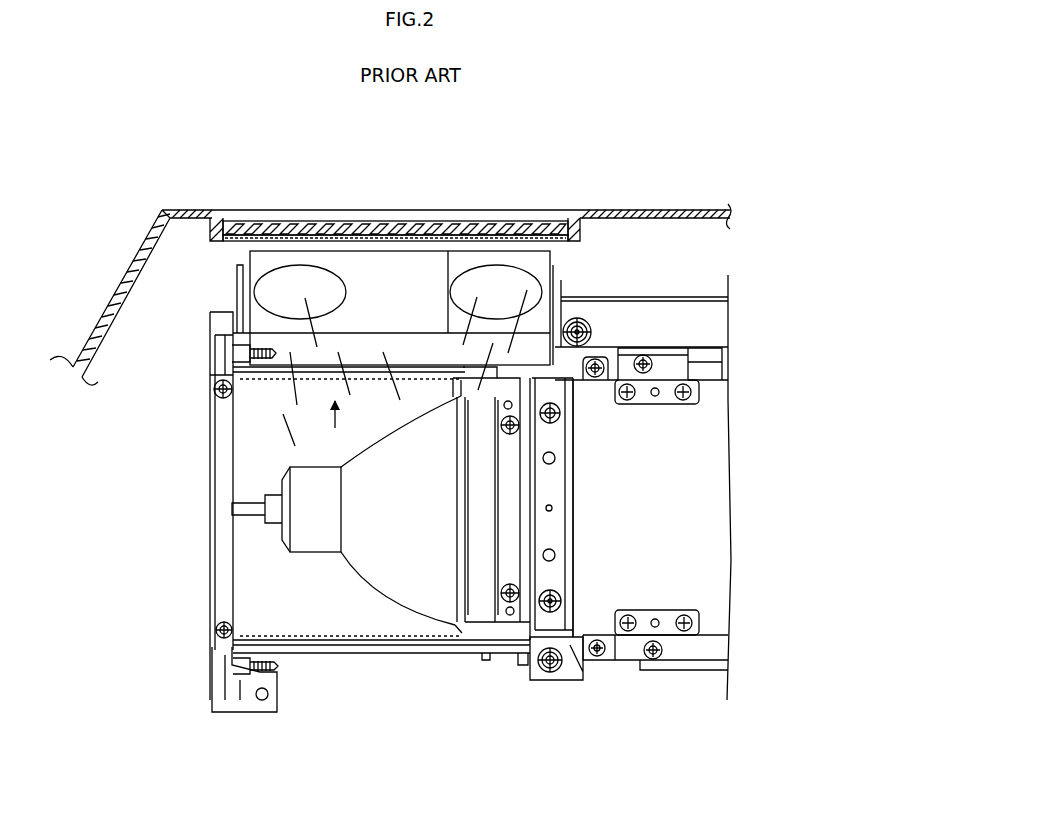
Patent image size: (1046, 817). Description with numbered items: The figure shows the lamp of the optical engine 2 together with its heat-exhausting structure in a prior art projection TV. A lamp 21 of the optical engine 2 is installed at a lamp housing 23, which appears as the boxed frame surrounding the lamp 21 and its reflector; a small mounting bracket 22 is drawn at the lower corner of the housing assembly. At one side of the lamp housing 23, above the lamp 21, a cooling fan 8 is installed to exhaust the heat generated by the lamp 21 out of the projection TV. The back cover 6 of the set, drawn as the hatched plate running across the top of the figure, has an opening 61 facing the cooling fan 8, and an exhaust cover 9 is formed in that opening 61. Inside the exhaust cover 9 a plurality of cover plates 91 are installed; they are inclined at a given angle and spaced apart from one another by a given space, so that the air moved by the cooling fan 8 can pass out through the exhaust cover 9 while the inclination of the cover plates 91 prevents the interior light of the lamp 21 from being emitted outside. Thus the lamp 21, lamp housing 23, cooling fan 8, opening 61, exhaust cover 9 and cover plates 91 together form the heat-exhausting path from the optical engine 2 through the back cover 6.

The optical engine 2 is at (388, 658).
The lamp 21 is at (373, 528).
The mounting bracket 22 is at (215, 686).
The lamp housing 23 is at (435, 645).
The back cover 6 is at (647, 209).
The opening 61 is at (548, 240).
The cooling fan 8 is at (398, 276).
The exhaust cover 9 is at (413, 219).
The cover plates 91 is at (472, 227).